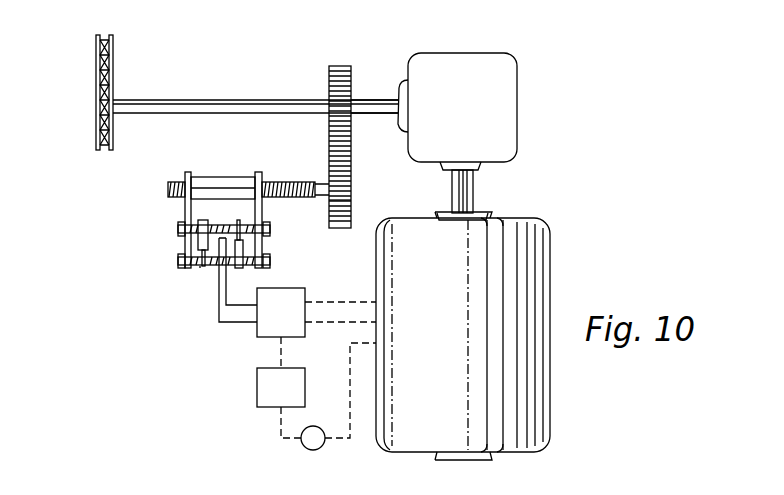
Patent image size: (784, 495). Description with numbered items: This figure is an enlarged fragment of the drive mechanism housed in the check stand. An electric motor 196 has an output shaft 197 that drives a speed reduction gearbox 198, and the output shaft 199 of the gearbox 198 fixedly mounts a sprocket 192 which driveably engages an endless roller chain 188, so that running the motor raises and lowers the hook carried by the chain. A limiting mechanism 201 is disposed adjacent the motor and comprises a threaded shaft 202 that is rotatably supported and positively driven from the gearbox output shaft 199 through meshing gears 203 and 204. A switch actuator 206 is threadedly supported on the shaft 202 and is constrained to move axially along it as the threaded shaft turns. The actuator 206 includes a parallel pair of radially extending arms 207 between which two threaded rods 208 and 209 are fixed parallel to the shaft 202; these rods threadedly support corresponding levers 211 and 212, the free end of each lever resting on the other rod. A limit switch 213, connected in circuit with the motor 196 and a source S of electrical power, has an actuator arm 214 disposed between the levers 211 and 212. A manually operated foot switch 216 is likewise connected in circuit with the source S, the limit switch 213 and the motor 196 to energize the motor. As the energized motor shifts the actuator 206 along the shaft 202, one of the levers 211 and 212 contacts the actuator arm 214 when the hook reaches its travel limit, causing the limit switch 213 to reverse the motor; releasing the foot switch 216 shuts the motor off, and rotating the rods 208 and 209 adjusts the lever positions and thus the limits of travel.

The endless roller chain 188 is at (97, 50).
The sprocket 192 is at (99, 98).
The electric motor 196 is at (463, 336).
The output shaft 197 is at (470, 195).
The speed reduction gearbox 198 is at (508, 112).
The output shaft 199 is at (362, 99).
The limiting mechanism 201 is at (196, 156).
The threaded shaft 202 is at (272, 199).
The gear 203 is at (352, 131).
The gear 204 is at (350, 196).
The switch actuator 206 is at (180, 208).
The arms 207 is at (201, 238).
The threaded rod 208 is at (233, 228).
The threaded rod 209 is at (199, 268).
The lever 211 is at (198, 246).
The lever 212 is at (251, 253).
The limit switch 213 is at (268, 333).
The actuator arm 214 is at (221, 314).
The foot switch 216 is at (272, 405).